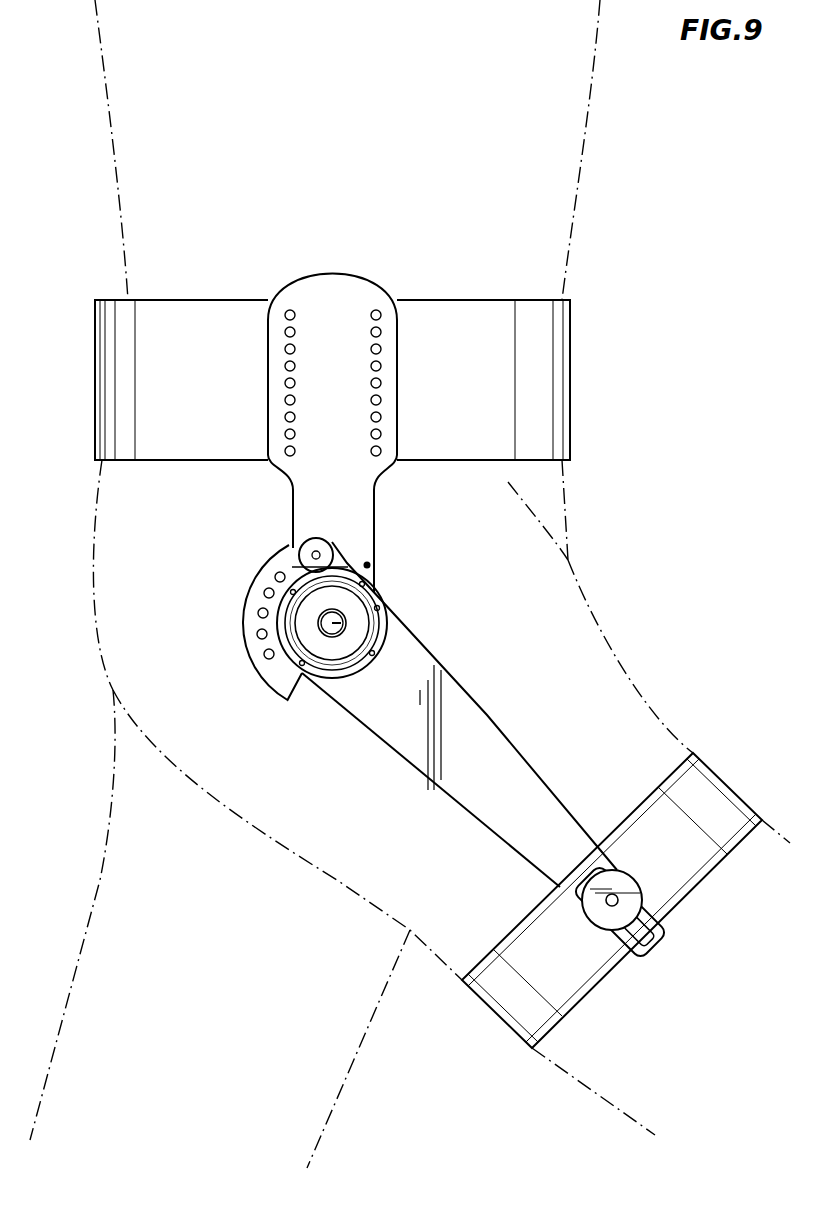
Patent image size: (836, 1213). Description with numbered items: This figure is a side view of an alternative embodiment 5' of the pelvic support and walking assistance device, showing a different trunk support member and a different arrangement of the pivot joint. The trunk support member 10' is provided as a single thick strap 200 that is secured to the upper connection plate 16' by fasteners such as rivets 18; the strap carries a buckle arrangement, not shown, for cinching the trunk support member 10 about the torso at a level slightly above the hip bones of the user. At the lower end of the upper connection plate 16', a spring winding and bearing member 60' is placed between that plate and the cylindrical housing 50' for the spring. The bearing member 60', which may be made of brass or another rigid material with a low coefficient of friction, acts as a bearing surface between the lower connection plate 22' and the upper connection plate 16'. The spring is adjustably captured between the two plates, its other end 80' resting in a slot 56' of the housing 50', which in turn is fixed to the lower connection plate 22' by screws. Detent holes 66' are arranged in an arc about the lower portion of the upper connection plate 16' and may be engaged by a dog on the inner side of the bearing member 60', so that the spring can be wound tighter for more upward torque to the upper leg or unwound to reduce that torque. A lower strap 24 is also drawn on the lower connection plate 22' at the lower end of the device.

The alternative embodiment of the pelvic support and walking assistance device 5' is at (410, 584).
The trunk support member 10' is at (428, 660).
The single thick strap 200 is at (132, 383).
The upper connection plate 16' is at (280, 433).
The rivets 18 is at (382, 349).
The trunk support member 10 is at (367, 595).
The spring winding and bearing member 60' is at (369, 555).
The cylindrical housing 50' is at (374, 623).
The slot 56' is at (356, 620).
The other end of spring 80' is at (363, 623).
The detent holes 66' is at (232, 622).
The lower connection plate 22' is at (459, 714).
The lower cuff strap 24 is at (700, 817).